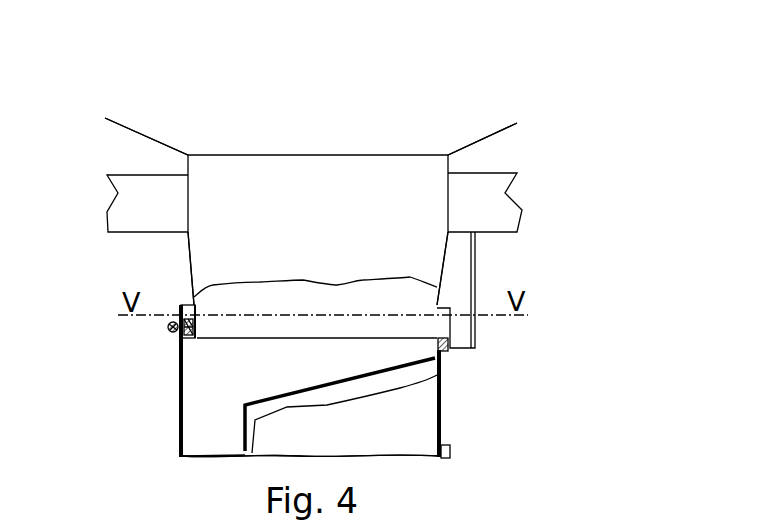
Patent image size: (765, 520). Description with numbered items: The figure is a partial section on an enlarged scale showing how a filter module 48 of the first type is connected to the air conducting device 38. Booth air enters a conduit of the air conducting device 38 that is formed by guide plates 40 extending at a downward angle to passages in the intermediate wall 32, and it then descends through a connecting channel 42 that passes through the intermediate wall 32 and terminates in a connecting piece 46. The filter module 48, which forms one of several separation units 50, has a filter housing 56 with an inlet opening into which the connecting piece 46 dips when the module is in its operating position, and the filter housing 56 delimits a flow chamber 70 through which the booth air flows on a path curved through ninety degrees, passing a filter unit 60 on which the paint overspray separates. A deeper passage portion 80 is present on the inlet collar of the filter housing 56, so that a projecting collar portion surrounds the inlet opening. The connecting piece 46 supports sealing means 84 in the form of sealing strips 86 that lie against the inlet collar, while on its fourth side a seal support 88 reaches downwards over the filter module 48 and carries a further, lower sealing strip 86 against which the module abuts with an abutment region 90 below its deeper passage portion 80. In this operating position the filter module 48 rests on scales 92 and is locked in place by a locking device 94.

The intermediate wall 32 is at (507, 213).
The air conducting device 38 is at (506, 153).
The guide plates 40 is at (140, 132).
The connecting channel 42 is at (426, 237).
The connecting piece 46 is at (188, 253).
The filter module 48 is at (178, 456).
The separation unit 50 is at (176, 420).
The filter housing 56 is at (176, 395).
The filter unit 60 is at (374, 428).
The flow chamber 70 is at (223, 417).
The deeper passage portion 80 is at (437, 338).
The sealing means 84 is at (190, 340).
The sealing strip 86 is at (181, 330).
The seal support 88 is at (474, 286).
The abutment region 90 is at (448, 355).
The scales 92 is at (205, 512).
The locking device 94 is at (176, 305).